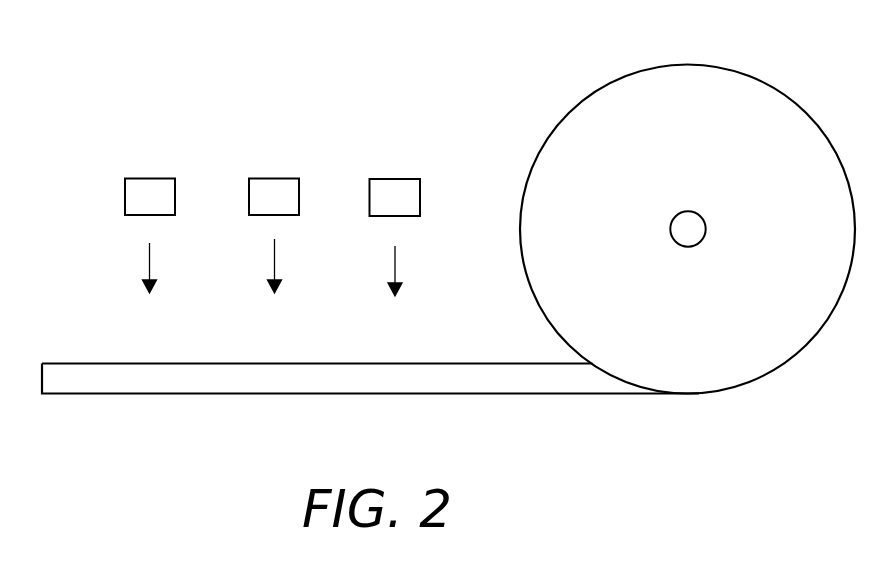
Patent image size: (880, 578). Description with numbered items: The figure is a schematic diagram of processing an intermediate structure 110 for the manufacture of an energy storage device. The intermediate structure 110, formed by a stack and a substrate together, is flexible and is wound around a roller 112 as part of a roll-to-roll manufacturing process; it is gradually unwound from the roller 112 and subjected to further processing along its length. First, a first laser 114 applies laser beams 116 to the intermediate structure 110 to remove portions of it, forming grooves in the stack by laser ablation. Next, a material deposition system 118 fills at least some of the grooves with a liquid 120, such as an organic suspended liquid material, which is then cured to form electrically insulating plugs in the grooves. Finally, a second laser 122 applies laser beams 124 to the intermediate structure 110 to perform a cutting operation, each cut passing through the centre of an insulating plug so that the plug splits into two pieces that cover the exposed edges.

The intermediate structure 110 is at (688, 65).
The roller 112 is at (687, 212).
The first laser 114 is at (398, 179).
The laser beams 116 is at (396, 268).
The material deposition system 118 is at (275, 178).
The liquid 120 is at (275, 266).
The second laser 122 is at (151, 178).
The laser beams 124 is at (150, 262).